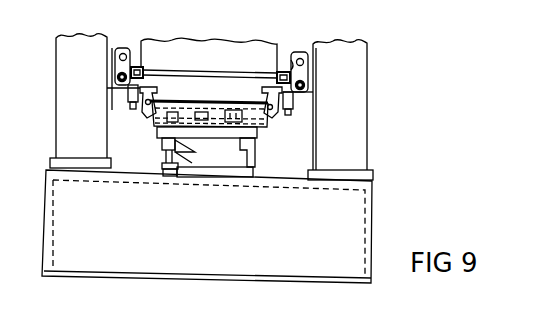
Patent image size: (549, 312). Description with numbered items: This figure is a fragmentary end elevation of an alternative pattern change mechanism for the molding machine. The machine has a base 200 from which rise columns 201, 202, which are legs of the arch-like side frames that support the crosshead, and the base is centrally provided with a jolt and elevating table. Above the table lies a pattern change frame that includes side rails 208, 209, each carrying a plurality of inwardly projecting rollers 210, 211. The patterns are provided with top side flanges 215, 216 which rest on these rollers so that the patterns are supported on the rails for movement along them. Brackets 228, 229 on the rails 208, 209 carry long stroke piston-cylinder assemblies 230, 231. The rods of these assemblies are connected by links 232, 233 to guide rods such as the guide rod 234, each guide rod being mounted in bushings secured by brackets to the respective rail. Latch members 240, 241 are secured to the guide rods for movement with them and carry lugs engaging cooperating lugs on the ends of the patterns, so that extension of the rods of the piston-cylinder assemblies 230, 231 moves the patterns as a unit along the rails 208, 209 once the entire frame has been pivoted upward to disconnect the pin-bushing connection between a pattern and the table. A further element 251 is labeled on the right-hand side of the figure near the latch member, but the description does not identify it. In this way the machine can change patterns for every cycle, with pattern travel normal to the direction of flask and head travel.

The base 200 is at (373, 213).
The column 201 is at (52, 147).
The column 202 is at (368, 142).
The side rail 208 is at (148, 112).
The side rail 209 is at (278, 113).
The rollers 210 is at (107, 89).
The rollers 211 is at (281, 96).
The top side flange 215 is at (144, 72).
The top side flange 216 is at (280, 77).
The bracket 228 is at (127, 98).
The bracket 229 is at (296, 104).
The long stroke piston-cylinder assembly 230 is at (116, 78).
The long stroke piston-cylinder assembly 231 is at (309, 82).
The link 232 is at (112, 63).
The link 233 is at (309, 66).
The guide rod 234 is at (121, 48).
The latch member 240 is at (141, 42).
The latch member 241 is at (295, 54).
The right bracket plate 251 is at (300, 52).